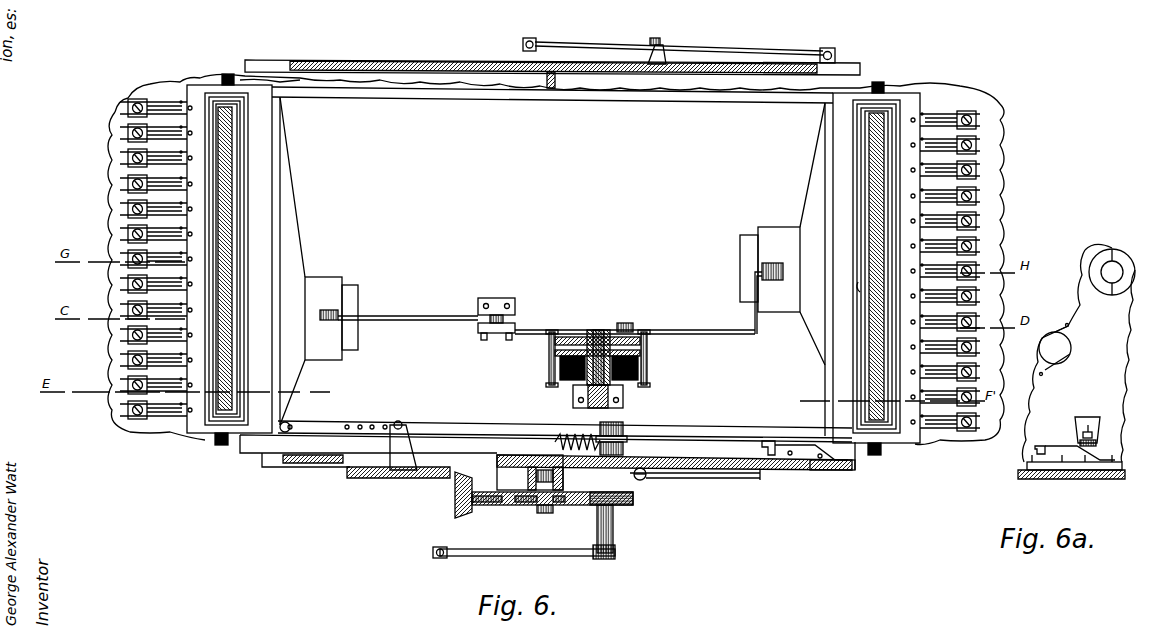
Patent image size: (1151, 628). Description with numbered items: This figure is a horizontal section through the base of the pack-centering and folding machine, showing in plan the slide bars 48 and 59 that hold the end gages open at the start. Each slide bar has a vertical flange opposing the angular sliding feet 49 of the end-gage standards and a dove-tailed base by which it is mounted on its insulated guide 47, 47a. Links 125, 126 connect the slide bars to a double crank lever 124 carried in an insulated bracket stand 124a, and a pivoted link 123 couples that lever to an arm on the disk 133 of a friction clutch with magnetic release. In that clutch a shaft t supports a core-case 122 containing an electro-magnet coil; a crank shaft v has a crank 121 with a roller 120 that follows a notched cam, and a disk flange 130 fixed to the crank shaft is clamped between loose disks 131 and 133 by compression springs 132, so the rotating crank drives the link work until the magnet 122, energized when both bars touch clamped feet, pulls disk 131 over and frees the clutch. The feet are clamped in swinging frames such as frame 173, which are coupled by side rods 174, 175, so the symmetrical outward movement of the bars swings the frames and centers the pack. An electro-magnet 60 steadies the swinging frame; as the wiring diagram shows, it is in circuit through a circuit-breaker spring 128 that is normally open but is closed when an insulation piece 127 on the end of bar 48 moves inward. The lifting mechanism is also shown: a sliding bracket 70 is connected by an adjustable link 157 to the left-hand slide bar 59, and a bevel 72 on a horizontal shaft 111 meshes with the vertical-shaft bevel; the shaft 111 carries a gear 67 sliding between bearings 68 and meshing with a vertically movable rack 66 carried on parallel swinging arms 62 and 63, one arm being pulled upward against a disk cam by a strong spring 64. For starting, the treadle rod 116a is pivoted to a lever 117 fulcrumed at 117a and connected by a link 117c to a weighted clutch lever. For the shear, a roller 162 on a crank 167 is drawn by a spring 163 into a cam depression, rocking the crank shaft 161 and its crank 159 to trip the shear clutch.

In FIG. 6, the guide 47 is at (740, 250).
In FIG. 6, the guide 47a is at (360, 302).
In FIG. 6, the slide bar 48 is at (824, 232).
In FIG. 6A, the slide bar 48 is at (1105, 411).
In FIG. 6, the foot 49 is at (975, 172).
In FIG. 6, the slide bar 59 is at (290, 192).
In FIG. 6, the electro-magnet 60 is at (858, 283).
In FIG. 6A, the electro-magnet 60 is at (1095, 288).
In FIG. 6, the swinging arm 62 is at (560, 479).
In FIG. 6, the swinging arm 63 is at (695, 480).
In FIG. 6, the spring 64 is at (644, 478).
In FIG. 6, the rack 66 is at (530, 472).
In FIG. 6, the gear 67 is at (547, 519).
In FIG. 6, the bearings 68 is at (565, 506).
In FIG. 6, the sliding bracket 70 is at (355, 478).
In FIG. 6, the bevel gear 72 is at (455, 503).
In FIG. 6, the horizontal shaft 111 is at (636, 500).
In FIG. 6, the vertical rod 116a is at (835, 52).
In FIG. 6, the lever 117 is at (738, 49).
In FIG. 6, the fulcrum 117a is at (662, 40).
In FIG. 6, the link 117c is at (535, 40).
In FIG. 6, the roller 120 is at (630, 325).
In FIG. 6, the crank 121 is at (602, 330).
In FIG. 6A, the crank 121 is at (1096, 446).
In FIG. 6, the core-case 122 is at (573, 388).
In FIG. 6, the link 123 is at (484, 336).
In FIG. 6, the double crank lever 124 is at (480, 330).
In FIG. 6, the bracket stand 124a is at (503, 302).
In FIG. 6, the link 125 is at (708, 338).
In FIG. 6, the link 126 is at (434, 322).
In FIG. 6, the insulation piece 127 is at (832, 455).
In FIG. 6, the circuit breaker spring 128 is at (790, 440).
In FIG. 6A, the circuit breaker spring 128 is at (1066, 446).
In FIG. 6, the disk flange 130 is at (650, 345).
In FIG. 6, the disk 131 is at (550, 352).
In FIG. 6, the springs 132 is at (650, 372).
In FIG. 6, the disk 133 is at (549, 339).
In FIG. 6, the adjustable link 157 is at (335, 428).
In FIG. 6, the crank 159 is at (562, 556).
In FIG. 6, the crank shaft 161 is at (614, 545).
In FIG. 6, the roller 162 is at (628, 424).
In FIG. 6, the spring 163 is at (560, 434).
In FIG. 6, the crank 167 is at (603, 428).
In FIG. 6, the swinging frame 173 is at (208, 448).
In FIG. 6, the side rod 174 is at (500, 427).
In FIG. 6, the side rod 175 is at (480, 92).
In FIG. 6, the crank shaft v is at (624, 390).
In FIG. 6, the shaft t is at (585, 400).